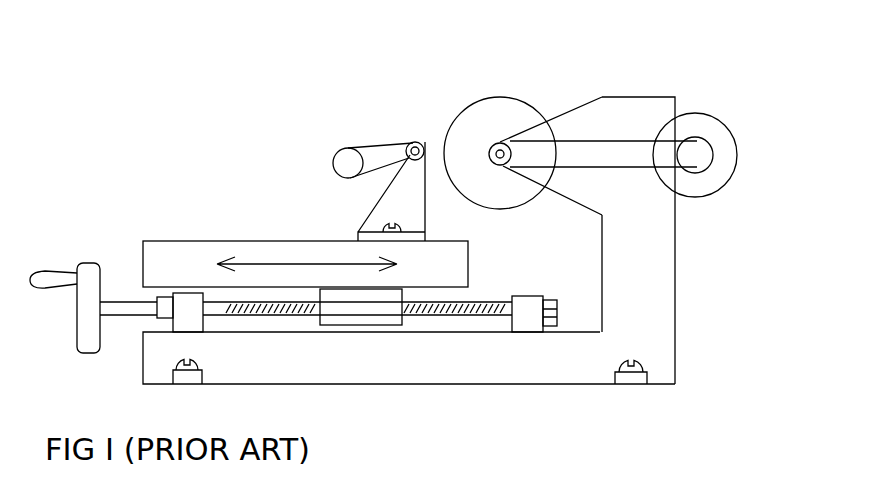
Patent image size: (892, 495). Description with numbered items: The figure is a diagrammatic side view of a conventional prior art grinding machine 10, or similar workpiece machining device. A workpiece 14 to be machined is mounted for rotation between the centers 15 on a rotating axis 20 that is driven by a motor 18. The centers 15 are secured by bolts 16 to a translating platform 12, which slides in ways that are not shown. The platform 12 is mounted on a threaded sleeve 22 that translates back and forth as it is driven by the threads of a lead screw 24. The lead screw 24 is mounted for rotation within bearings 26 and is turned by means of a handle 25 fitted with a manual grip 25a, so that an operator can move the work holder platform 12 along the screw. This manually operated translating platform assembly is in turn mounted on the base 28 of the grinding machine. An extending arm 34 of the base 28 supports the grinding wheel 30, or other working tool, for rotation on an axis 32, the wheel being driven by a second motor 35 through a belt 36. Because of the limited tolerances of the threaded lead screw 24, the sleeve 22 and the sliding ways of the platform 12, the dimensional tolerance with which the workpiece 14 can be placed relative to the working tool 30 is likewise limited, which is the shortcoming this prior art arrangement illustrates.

The grinding machine 10 is at (632, 78).
The translating platform 12 is at (143, 252).
The workpiece 14 is at (410, 143).
The centers 15 is at (373, 205).
The bolts 16 is at (400, 228).
The motor 18 is at (343, 148).
The rotating axis 20 is at (419, 147).
The threaded sleeve 22 is at (369, 315).
The lead screw 24 is at (287, 317).
The handle 25 is at (88, 353).
The manual grip 25a is at (30, 272).
The bearings 26 is at (193, 332).
The base 28 is at (493, 366).
The grinding wheel 30 is at (487, 97).
The axis 32 is at (493, 166).
The extending arm 34 is at (567, 108).
The motor 35 is at (720, 123).
The belt 36 is at (623, 173).